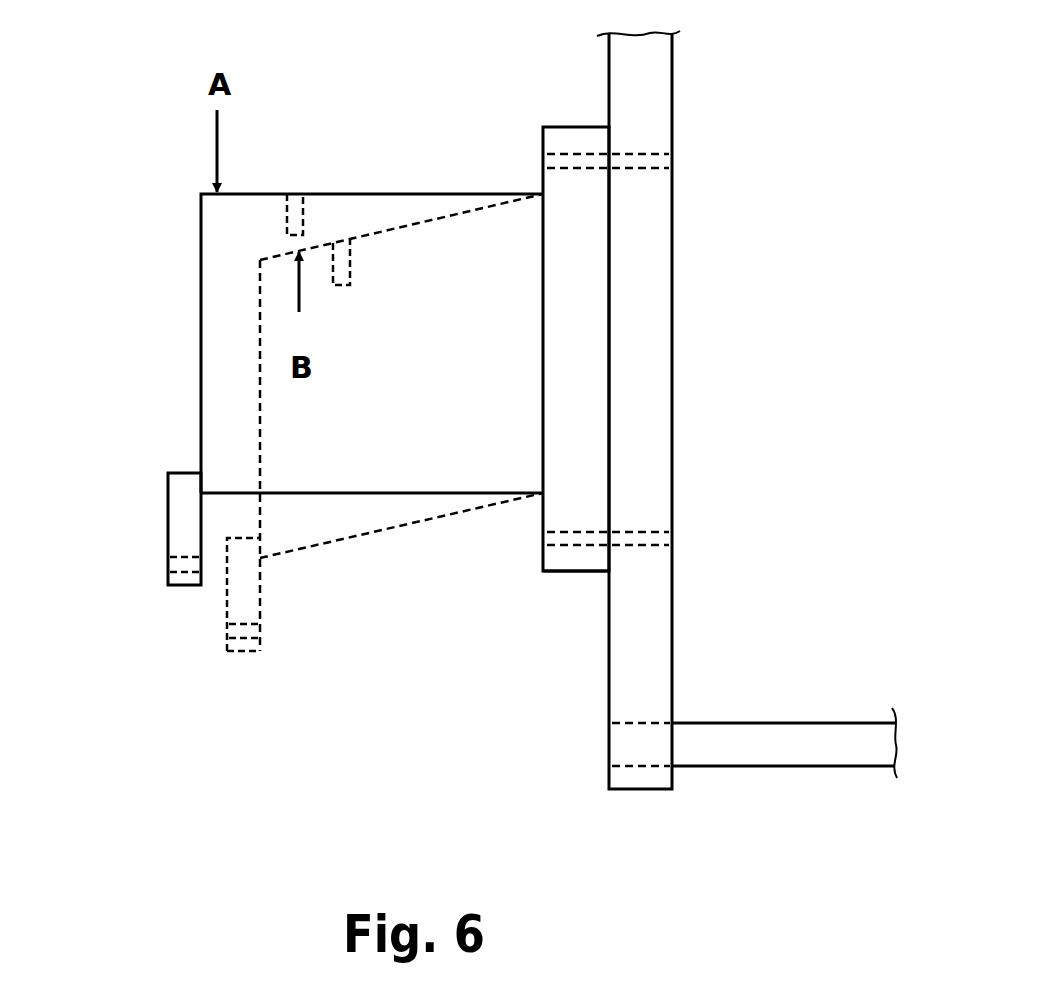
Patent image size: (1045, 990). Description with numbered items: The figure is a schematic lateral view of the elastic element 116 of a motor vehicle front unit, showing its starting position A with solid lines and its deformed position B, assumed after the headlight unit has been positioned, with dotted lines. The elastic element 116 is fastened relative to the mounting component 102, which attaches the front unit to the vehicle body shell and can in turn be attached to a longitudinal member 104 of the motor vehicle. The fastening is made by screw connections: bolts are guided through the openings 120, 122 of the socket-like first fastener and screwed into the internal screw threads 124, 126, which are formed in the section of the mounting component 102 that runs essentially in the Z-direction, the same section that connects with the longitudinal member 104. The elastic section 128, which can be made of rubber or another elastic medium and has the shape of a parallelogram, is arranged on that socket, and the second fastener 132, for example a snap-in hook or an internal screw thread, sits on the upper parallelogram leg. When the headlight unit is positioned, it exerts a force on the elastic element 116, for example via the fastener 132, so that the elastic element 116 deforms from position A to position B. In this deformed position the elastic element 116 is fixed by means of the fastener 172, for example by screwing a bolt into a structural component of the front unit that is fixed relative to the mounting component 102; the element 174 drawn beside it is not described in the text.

The mounting component 102 is at (673, 311).
The longitudinal member 104 is at (772, 721).
The elastic element 116 is at (188, 363).
The opening 120 is at (548, 162).
The opening 122 is at (548, 540).
The internal screw thread 124 is at (665, 162).
The internal screw thread 126 is at (660, 539).
The elastic section 128 is at (200, 237).
The second fastener 132 is at (293, 200).
The fastener 172 is at (185, 565).
The bracket 174 is at (170, 525).